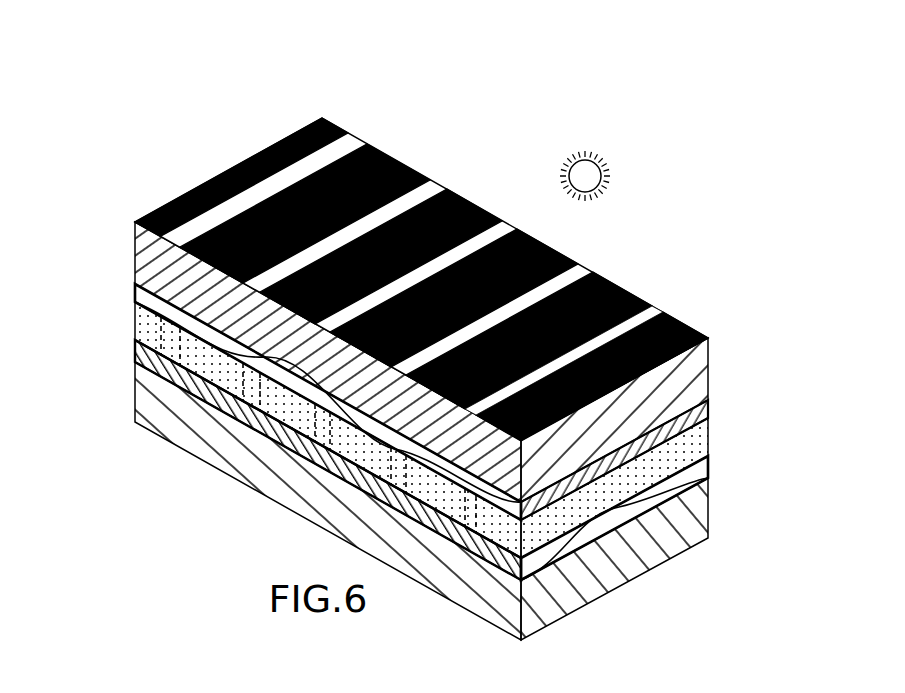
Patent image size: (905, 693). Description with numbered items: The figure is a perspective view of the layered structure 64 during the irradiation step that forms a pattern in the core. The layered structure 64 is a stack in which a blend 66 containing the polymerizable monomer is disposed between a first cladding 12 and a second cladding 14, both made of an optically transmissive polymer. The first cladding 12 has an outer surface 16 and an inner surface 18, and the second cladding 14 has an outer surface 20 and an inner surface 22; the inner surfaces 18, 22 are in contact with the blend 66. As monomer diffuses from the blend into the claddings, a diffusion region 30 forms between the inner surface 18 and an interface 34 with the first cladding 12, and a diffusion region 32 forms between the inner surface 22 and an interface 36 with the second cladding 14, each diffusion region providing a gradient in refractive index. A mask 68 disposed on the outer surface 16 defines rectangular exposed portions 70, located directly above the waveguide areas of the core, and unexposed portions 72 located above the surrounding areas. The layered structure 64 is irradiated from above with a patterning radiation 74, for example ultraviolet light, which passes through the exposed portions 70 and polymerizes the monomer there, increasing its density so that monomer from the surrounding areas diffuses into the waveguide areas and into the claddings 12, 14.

The layered structure 64 is at (437, 333).
The mask 68 is at (220, 158).
The unexposed portions 72 is at (413, 168).
The exposed portions 70 is at (657, 318).
The patterning radiation 74 is at (598, 160).
The first cladding 12 is at (694, 378).
The diffusion region 30 is at (694, 408).
The blend 66 is at (694, 447).
The diffusion region 32 is at (694, 470).
The second cladding 14 is at (694, 522).
The outer surface 16 is at (147, 232).
The interface 34 is at (160, 288).
The inner surface 18 is at (150, 312).
The inner surface 22 is at (165, 352).
The interface 36 is at (152, 370).
The outer surface 20 is at (150, 428).